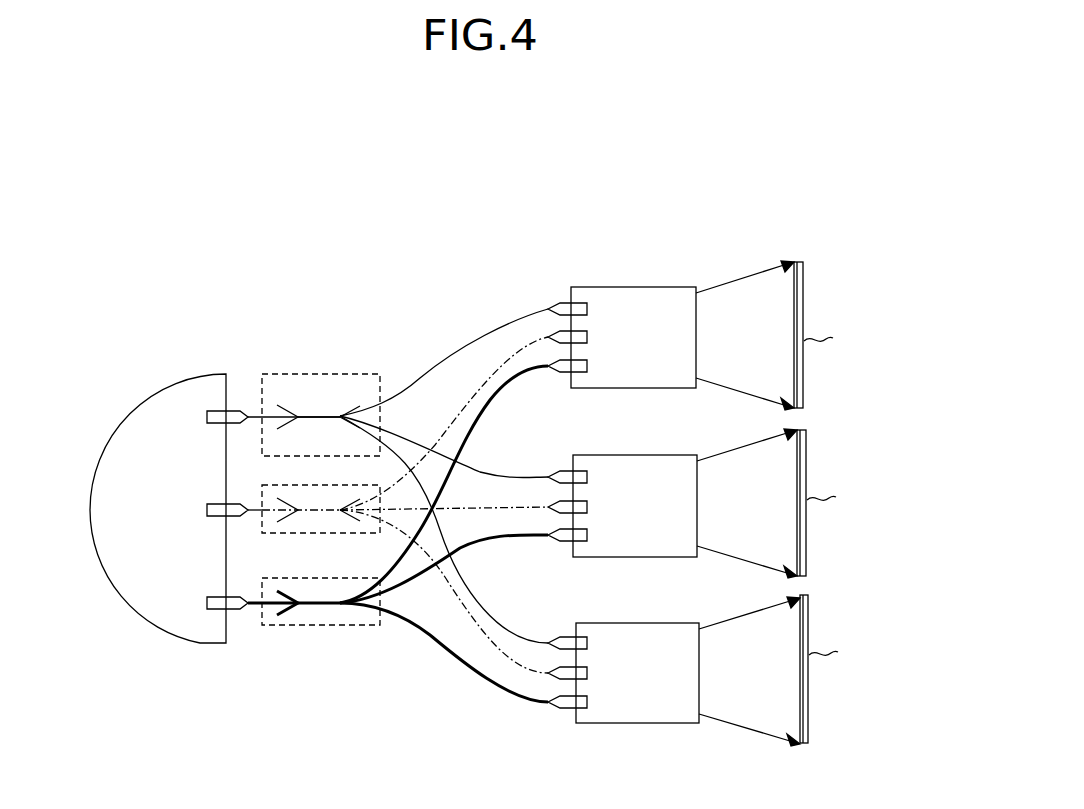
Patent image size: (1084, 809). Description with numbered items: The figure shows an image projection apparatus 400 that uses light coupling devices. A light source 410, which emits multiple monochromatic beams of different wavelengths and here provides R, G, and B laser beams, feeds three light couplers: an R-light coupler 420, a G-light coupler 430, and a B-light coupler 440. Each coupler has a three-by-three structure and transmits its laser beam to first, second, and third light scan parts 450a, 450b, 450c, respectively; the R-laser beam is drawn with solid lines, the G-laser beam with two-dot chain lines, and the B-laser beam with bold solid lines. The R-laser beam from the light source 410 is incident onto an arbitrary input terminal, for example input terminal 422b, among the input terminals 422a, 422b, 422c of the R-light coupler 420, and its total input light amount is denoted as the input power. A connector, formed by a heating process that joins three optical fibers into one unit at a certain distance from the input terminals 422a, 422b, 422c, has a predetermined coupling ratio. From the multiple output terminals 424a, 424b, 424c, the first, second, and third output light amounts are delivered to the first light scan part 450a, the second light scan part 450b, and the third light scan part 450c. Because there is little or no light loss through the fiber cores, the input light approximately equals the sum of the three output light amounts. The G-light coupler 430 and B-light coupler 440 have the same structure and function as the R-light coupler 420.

The image projection apparatus 400 is at (366, 275).
The light source 410 is at (154, 404).
The R-light coupler 420 is at (300, 374).
The input terminal 422a is at (296, 411).
The input terminal 422b is at (272, 404).
The input terminal 422c is at (289, 424).
The output terminal 424a is at (399, 397).
The output terminal 424b is at (401, 430).
The output terminal 424c is at (420, 492).
The G-light coupler 430 is at (278, 533).
The B-light coupler 440 is at (278, 625).
The first light scan part 450a is at (619, 287).
The second light scan part 450b is at (619, 455).
The third light scan part 450c is at (619, 623).